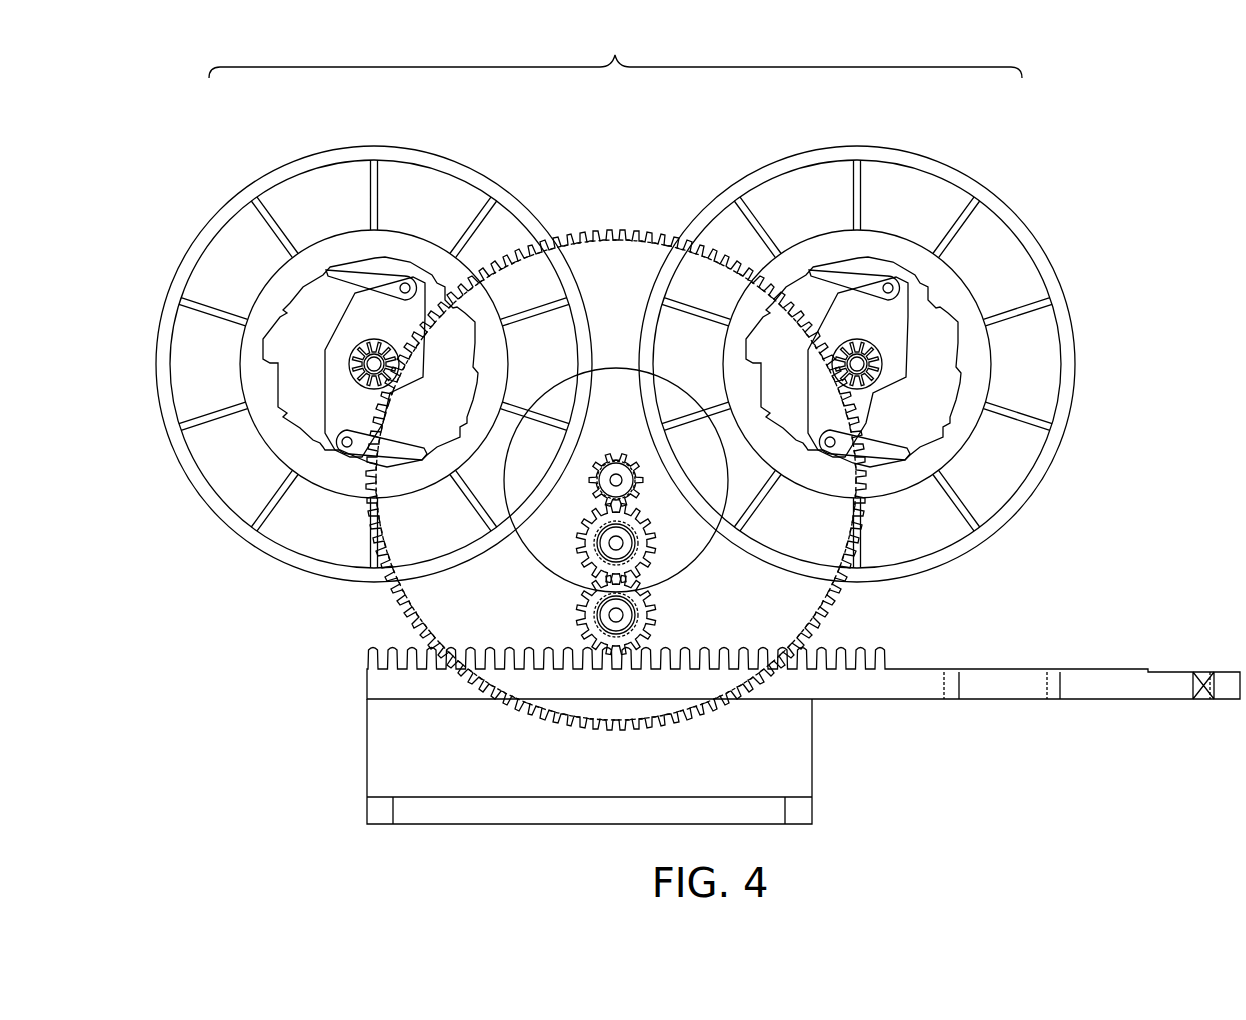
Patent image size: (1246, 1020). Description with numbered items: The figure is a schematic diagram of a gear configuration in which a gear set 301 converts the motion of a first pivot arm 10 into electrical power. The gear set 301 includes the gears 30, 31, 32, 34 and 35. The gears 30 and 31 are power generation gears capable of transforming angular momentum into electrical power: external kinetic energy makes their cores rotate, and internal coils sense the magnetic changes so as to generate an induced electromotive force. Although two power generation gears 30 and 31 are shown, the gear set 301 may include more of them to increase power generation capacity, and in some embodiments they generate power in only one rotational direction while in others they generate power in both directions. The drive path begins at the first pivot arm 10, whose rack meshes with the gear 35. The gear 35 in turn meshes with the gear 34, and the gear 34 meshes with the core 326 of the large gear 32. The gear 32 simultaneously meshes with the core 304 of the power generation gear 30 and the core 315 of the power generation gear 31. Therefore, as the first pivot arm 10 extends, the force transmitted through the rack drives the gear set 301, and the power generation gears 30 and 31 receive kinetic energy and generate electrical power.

The gear set 301 is at (615, 49).
The power generation gear 31 is at (387, 150).
The power generation gear 30 is at (870, 150).
The gear 32 is at (628, 230).
The core 315 is at (350, 364).
The core 304 is at (880, 365).
The core 326 is at (640, 492).
The gear 34 is at (582, 553).
The gear 35 is at (645, 630).
The first pivot arm 10 is at (328, 762).